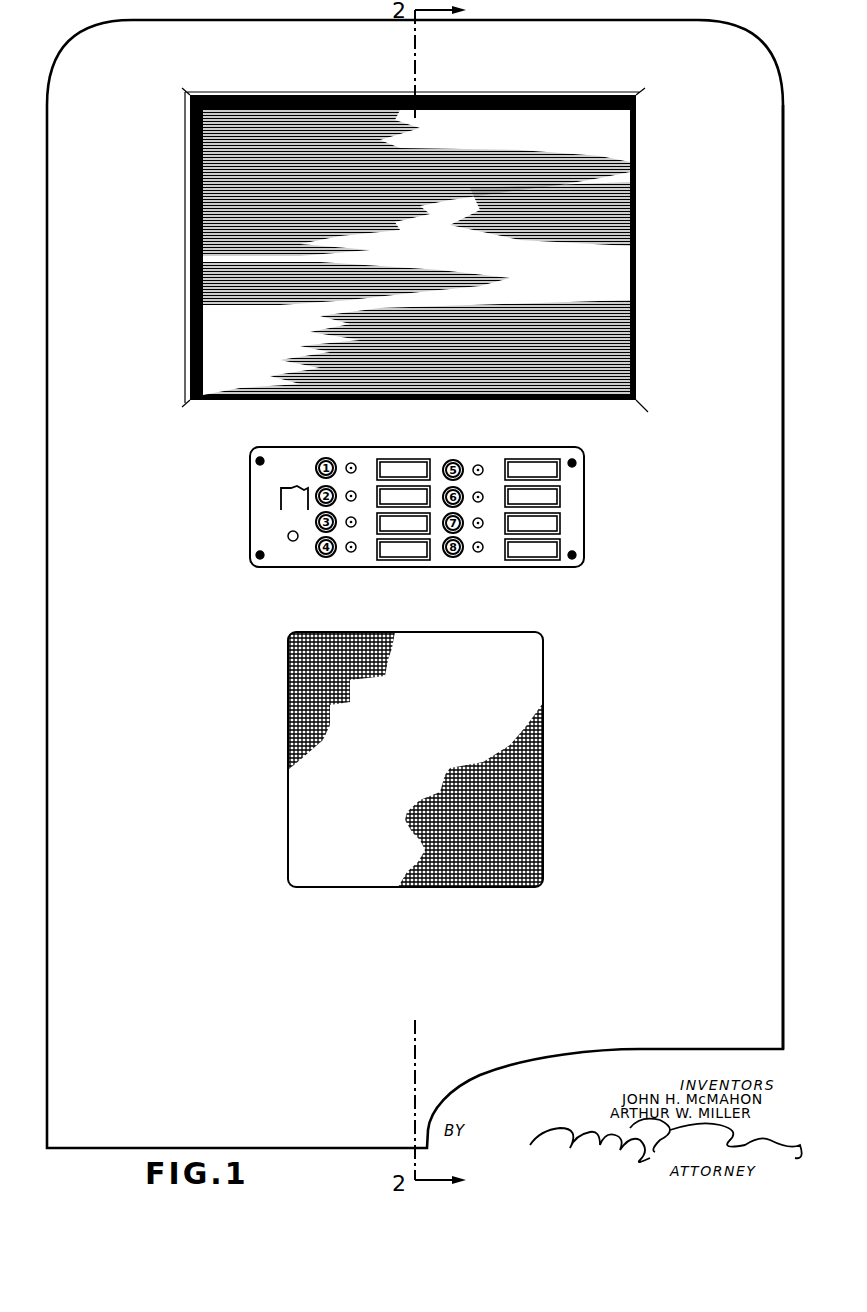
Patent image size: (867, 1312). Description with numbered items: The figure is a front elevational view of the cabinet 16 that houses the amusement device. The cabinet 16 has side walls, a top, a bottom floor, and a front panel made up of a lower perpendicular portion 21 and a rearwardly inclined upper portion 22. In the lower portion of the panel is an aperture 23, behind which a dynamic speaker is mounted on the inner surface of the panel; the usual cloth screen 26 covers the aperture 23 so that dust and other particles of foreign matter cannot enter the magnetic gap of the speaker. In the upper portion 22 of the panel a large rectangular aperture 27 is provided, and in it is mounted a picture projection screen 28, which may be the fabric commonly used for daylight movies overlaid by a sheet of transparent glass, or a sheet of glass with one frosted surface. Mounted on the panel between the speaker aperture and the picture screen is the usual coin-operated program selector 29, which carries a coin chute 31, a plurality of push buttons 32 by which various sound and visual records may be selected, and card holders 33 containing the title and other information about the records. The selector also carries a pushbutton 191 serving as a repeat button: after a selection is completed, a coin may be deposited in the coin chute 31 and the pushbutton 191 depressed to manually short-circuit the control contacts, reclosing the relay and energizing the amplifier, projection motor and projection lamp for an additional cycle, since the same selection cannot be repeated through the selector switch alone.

The cabinet 16 is at (40, 390).
The lower perpendicular portion 21 is at (758, 731).
The rearwardly inclined upper portion 22 is at (760, 255).
The aperture 23 is at (290, 815).
The cloth screen 26 is at (522, 815).
The rectangular aperture 27 is at (632, 270).
The picture projection screen 28 is at (228, 348).
The coin-operated program selector 29 is at (570, 510).
The coin chute 31 is at (282, 497).
The push buttons 32 is at (480, 465).
The card holders 33 is at (532, 468).
The pushbutton 191 is at (292, 542).